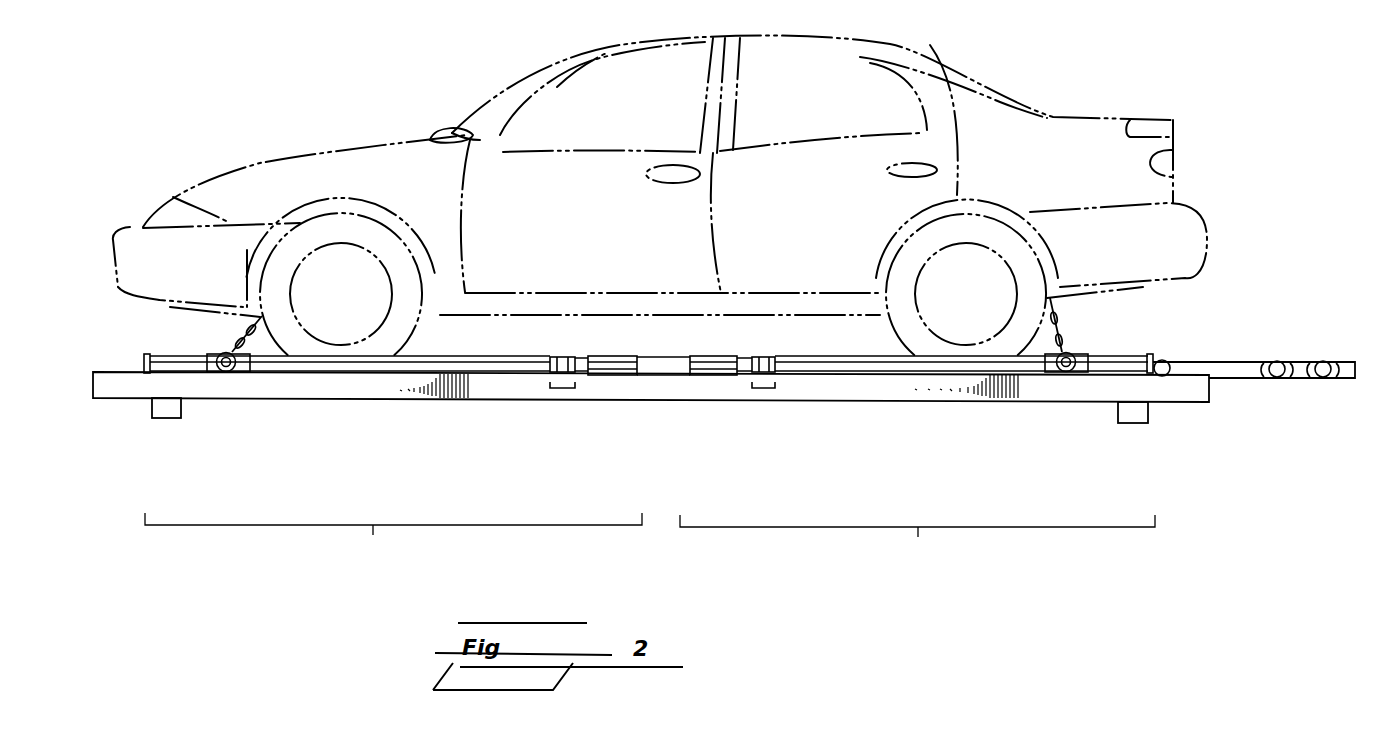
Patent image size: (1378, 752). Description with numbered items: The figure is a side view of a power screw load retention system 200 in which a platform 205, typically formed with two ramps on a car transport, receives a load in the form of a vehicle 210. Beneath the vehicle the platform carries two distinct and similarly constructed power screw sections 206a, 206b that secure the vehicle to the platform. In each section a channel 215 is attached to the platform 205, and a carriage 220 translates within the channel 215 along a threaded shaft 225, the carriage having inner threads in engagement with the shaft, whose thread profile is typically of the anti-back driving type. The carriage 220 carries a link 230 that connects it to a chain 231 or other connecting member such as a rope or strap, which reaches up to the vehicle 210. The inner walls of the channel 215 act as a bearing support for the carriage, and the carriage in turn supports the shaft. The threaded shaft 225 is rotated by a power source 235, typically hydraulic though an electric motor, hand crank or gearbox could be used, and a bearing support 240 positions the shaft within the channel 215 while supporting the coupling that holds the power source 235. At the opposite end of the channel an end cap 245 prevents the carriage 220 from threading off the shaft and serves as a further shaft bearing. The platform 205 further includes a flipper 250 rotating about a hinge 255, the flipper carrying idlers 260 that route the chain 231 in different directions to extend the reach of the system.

The power screw load retention system 200 is at (82, 272).
The platform 205 is at (330, 404).
The power screw section 206a is at (393, 542).
The power screw section 206b is at (917, 545).
The vehicle 210 is at (290, 155).
The channel 215 is at (443, 356).
The carriage 220 is at (207, 374).
The threaded shaft 225 is at (388, 377).
The link 230 is at (226, 351).
The chain 231 is at (247, 343).
The power source 235 is at (620, 358).
The bearing support 240 is at (562, 388).
The end cap 245 is at (144, 364).
The flipper 250 is at (1247, 380).
The hinge 255 is at (1172, 379).
The idler 260 is at (1278, 379).